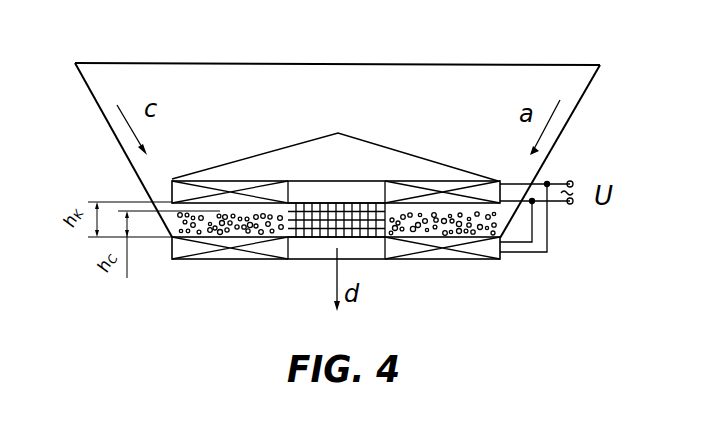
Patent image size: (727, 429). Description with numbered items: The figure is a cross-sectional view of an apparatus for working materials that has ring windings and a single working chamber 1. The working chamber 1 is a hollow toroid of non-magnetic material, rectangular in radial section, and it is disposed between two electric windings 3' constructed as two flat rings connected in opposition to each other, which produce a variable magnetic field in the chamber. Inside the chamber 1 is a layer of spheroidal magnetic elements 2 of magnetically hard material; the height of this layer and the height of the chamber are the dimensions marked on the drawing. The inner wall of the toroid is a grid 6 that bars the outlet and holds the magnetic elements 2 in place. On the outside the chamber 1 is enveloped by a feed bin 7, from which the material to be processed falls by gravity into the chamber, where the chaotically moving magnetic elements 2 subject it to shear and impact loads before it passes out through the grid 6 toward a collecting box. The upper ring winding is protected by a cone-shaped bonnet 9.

The working chamber 1 is at (195, 240).
The magnetic elements 2 is at (245, 222).
The electric windings 3' is at (336, 211).
The grid 6 is at (318, 206).
The feed bin 7 is at (105, 119).
The cone-shaped bonnet 9 is at (380, 146).